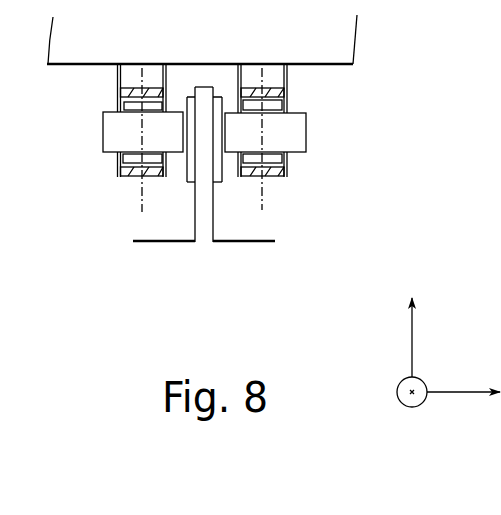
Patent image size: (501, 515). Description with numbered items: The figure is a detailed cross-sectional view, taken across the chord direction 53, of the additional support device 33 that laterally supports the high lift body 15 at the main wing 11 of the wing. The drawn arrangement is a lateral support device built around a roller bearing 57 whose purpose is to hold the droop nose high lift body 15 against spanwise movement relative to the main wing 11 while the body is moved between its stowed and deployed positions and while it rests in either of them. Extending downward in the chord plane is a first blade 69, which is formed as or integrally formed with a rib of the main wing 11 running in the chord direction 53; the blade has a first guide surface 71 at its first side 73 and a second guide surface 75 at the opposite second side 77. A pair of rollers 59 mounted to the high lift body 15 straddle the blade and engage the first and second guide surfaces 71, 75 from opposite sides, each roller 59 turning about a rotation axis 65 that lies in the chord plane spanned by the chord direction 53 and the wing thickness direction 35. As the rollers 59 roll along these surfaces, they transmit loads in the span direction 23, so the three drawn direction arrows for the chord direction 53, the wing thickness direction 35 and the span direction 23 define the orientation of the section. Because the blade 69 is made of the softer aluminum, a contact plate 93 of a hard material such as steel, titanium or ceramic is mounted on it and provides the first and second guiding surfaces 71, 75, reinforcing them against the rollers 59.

The main wing 11 is at (248, 274).
The high lift body 15 is at (273, 44).
The span direction 23 is at (468, 395).
The additional support device 33 is at (338, 212).
The wing thickness direction 35 is at (412, 335).
The chord direction 53 is at (405, 407).
The roller bearing 57 is at (273, 268).
The roller 59 is at (115, 131).
The rotation axis 65 is at (140, 141).
The first blade 69 is at (202, 220).
The first guide surface 71 is at (184, 162).
The first side 73 is at (193, 222).
The second guide surface 75 is at (216, 162).
The second side 77 is at (212, 228).
The contact plate 93 is at (221, 100).